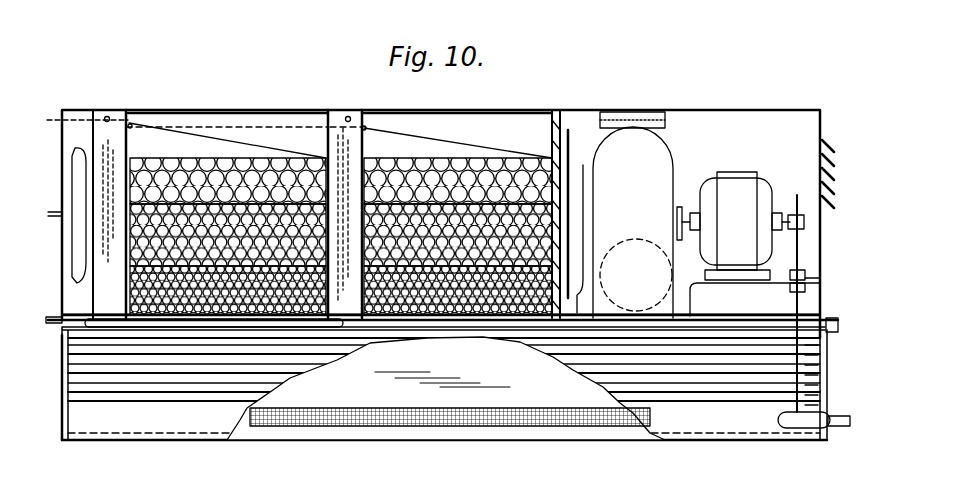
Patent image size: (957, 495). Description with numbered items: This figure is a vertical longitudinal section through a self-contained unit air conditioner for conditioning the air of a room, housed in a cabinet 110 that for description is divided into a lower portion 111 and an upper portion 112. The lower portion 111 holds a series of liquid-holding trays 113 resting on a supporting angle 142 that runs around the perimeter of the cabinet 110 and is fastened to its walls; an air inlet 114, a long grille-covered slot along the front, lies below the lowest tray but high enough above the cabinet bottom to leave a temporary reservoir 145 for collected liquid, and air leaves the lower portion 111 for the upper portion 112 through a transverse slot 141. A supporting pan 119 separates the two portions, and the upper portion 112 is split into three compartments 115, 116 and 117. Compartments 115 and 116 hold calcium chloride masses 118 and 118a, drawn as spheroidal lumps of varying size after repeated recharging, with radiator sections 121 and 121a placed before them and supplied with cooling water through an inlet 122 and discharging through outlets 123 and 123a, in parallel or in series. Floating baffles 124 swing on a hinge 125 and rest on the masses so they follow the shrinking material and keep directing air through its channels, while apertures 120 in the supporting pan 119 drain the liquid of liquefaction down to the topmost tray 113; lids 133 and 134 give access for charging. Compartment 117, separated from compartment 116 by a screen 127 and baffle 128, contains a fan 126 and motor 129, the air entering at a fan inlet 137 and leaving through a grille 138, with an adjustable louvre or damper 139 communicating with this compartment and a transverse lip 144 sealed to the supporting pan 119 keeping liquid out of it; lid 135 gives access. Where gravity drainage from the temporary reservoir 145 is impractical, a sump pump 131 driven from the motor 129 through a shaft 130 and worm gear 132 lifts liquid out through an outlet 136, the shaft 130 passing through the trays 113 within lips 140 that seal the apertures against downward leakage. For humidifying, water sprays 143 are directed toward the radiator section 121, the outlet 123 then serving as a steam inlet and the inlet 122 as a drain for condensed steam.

The cabinet 110 is at (64, 299).
The lower portion 111 is at (795, 392).
The upper portion 112 is at (820, 252).
The liquid-holding trays 113 is at (145, 363).
The air inlet 114 is at (398, 428).
The compartment 115 is at (295, 130).
The compartment 116 is at (556, 125).
The compartment 117 is at (732, 132).
The calcium chloride mass 118 is at (210, 158).
The calcium chloride mass 118a is at (438, 158).
The supporting pan 119 is at (655, 318).
The apertures 120 is at (428, 316).
The radiator section 121 is at (126, 145).
The radiator section 121a is at (366, 145).
The inlet 122 is at (345, 325).
The outlet 123 is at (108, 116).
The outlet 123a is at (348, 114).
The floating baffles 124 is at (268, 125).
The hinge 125 is at (131, 124).
The fan 126 is at (679, 170).
The screen 127 is at (576, 128).
The baffle 128 is at (602, 117).
The motor 129 is at (735, 185).
The shaft 130 is at (790, 300).
The sump pump 131 is at (790, 425).
The worm gear 132 is at (795, 212).
The lid 133 is at (258, 106).
The lid 134 is at (532, 106).
The lid 135 is at (683, 110).
The outlet 136 is at (835, 428).
The fan inlet 137 is at (594, 205).
The grille 138 is at (650, 110).
The adjustable louvre or damper 139 is at (822, 152).
The lips 140 is at (795, 330).
The transverse slot 141 is at (62, 345).
The supporting angle 142 is at (68, 405).
The water sprays 143 is at (87, 214).
The transverse lip 144 is at (574, 318).
The temporary reservoir 145 is at (675, 418).